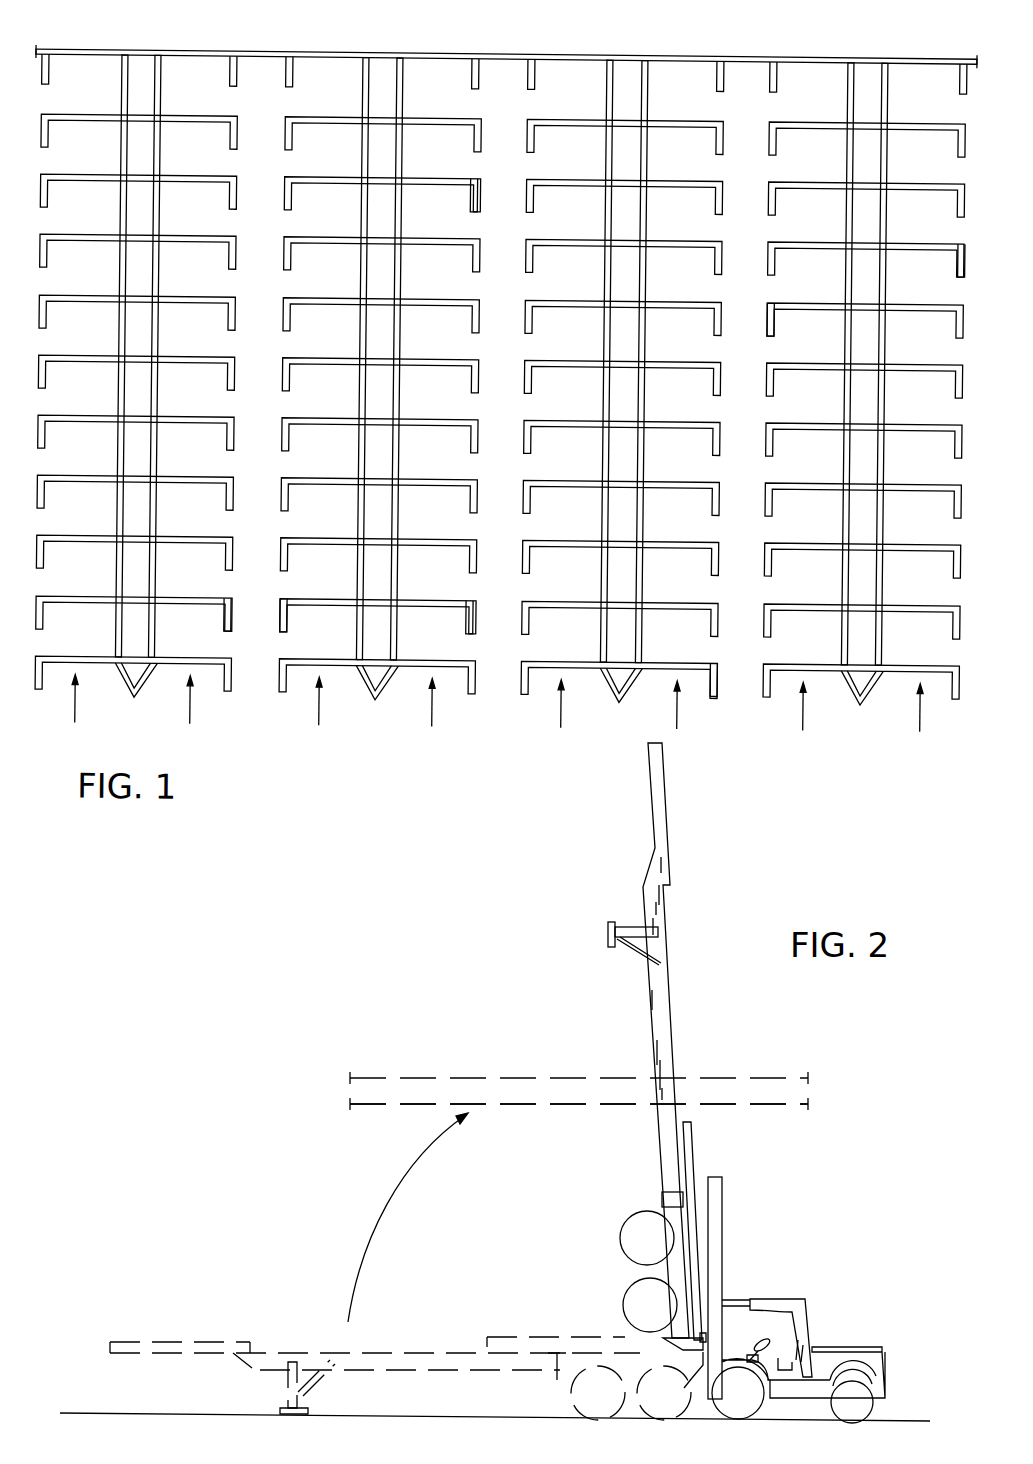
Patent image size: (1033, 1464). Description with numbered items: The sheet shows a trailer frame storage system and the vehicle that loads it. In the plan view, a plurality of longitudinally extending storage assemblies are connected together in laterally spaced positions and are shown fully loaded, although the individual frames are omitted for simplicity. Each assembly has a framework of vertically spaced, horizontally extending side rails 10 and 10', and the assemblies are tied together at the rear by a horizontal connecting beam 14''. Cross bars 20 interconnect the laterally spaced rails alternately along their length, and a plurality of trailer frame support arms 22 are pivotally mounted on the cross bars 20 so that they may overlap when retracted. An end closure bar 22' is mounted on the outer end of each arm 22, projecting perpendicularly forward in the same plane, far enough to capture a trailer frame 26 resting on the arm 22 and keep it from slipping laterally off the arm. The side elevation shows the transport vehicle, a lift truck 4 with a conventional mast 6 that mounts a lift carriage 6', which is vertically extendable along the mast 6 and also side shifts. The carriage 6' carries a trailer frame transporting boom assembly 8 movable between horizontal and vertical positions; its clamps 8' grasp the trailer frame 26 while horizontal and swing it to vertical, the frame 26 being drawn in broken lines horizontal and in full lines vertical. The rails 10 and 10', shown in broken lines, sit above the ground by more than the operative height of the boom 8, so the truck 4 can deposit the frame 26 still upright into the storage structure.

In FIG. 2, the lift truck 4 is at (808, 1322).
In FIG. 2, the mast 6 is at (741, 1288).
In FIG. 2, the lift carriage 6' is at (678, 1368).
In FIG. 2, the trailer frame transporting boom assembly 8 is at (715, 1231).
In FIG. 2, the clamps 8' is at (641, 1252).
In FIG. 1, the side rail 10 is at (501, 380).
In FIG. 2, the side rail 10 is at (579, 1062).
In FIG. 2, the lower side rail 10' is at (579, 1133).
In FIG. 1, the rear horizontal connecting beam 14'' is at (507, 47).
In FIG. 1, the cross bars 20 is at (190, 657).
In FIG. 1, the trailer frame support arms 22 is at (501, 376).
In FIG. 1, the end closure bar 22' is at (594, 461).
In FIG. 2, the trailer frame 26 is at (680, 1008).